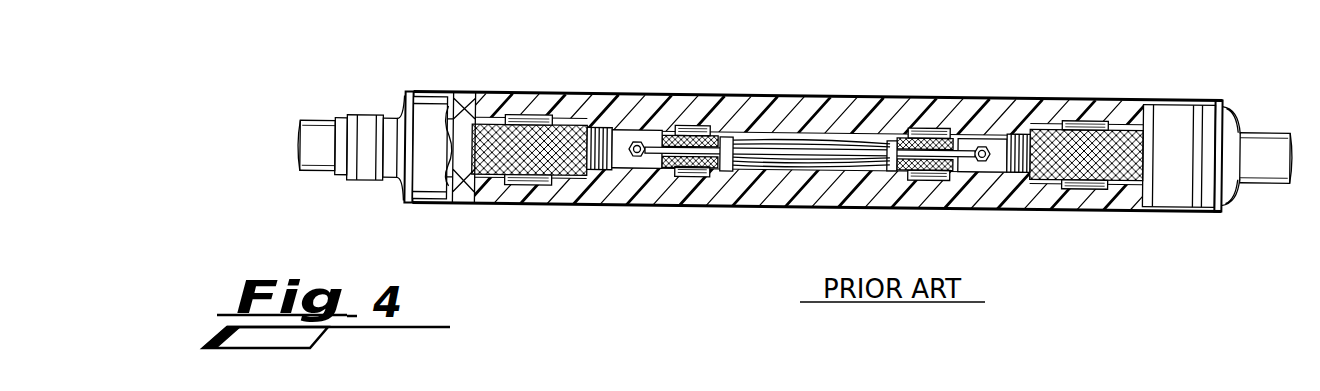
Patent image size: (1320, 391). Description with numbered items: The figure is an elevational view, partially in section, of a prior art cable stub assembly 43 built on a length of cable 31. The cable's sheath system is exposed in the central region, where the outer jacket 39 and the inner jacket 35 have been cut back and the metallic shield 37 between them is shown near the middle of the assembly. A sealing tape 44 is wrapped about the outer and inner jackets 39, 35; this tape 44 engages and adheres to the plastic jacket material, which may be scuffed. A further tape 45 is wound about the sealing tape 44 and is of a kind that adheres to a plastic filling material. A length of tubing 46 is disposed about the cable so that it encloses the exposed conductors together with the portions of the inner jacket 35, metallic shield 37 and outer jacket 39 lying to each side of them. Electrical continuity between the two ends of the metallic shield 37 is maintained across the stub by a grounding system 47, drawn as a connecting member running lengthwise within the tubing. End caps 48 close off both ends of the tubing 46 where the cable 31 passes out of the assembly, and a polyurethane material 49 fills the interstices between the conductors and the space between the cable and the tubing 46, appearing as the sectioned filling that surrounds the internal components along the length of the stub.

The cable 31 is at (314, 122).
The inner jacket 35 is at (733, 147).
The metallic shield 37 is at (603, 125).
The outer jacket 39 is at (458, 137).
The prior art cable stub assembly 43 is at (845, 78).
The sealing tape 44 is at (518, 120).
The tape 45 is at (545, 112).
The tubing 46 is at (1113, 98).
The grounding system 47 is at (970, 142).
The end caps 48 is at (427, 110).
The polyurethane material 49 is at (867, 117).